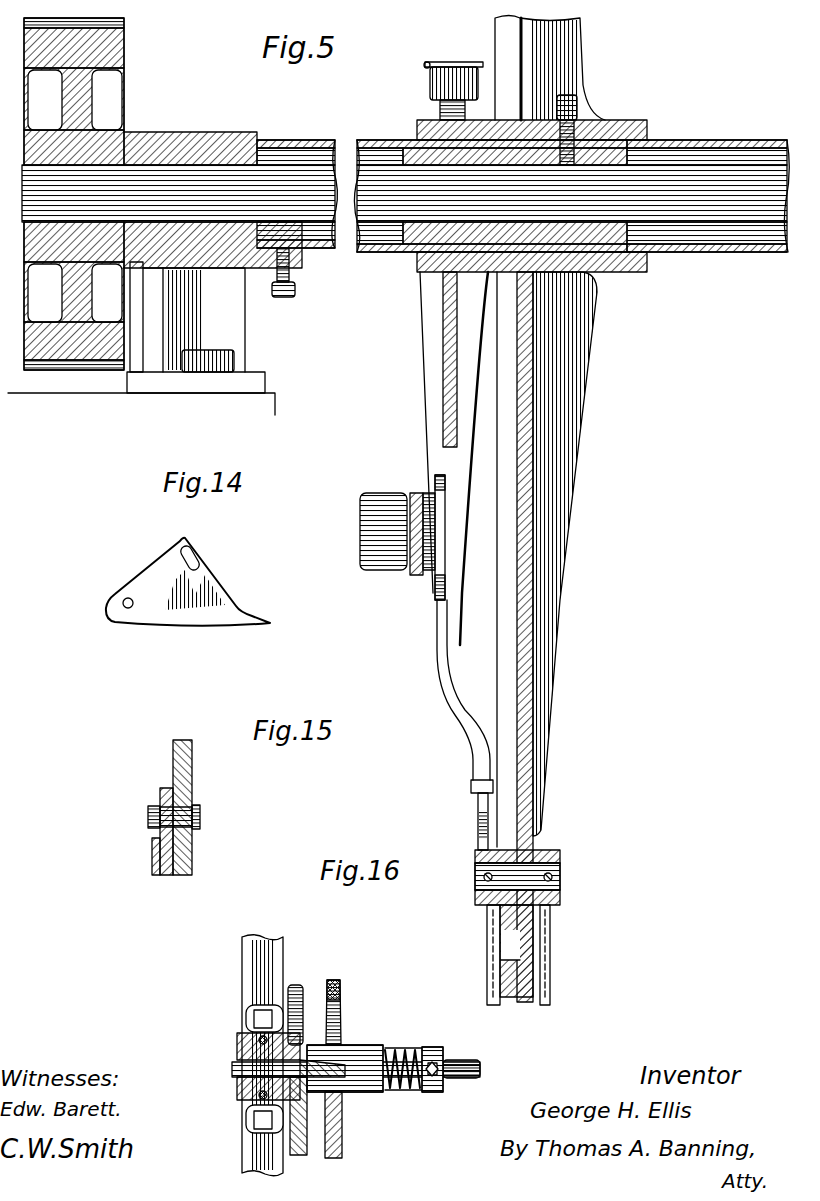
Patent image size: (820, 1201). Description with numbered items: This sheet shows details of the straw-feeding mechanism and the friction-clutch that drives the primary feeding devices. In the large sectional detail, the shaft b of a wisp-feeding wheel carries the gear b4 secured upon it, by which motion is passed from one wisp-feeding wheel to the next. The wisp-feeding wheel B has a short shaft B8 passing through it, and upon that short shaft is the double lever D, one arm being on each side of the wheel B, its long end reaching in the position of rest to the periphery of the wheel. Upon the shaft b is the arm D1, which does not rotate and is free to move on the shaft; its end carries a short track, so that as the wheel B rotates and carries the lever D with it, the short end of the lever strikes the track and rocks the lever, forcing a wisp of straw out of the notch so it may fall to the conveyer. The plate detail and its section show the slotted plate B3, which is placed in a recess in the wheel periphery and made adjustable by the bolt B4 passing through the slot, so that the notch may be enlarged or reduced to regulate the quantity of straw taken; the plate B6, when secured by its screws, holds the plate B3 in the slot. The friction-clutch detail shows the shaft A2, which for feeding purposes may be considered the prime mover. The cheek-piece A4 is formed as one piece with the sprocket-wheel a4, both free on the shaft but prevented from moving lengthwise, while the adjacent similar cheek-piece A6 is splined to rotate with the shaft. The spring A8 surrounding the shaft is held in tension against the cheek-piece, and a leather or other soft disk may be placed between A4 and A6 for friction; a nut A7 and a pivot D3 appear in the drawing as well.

In FIG. 5, the shaft b is at (282, 138).
In FIG. 5, the gear b4 is at (118, 107).
In FIG. 5, the wisp-feeding wheel B is at (557, 375).
In FIG. 15, the wisp-feeding wheel B is at (185, 862).
In FIG. 14, the plate B3 is at (205, 582).
In FIG. 15, the plate B3 is at (160, 790).
In FIG. 15, the bolt B4 is at (196, 816).
In FIG. 15, the plate B6 is at (150, 850).
In FIG. 5, the short shaft B8 is at (540, 870).
In FIG. 5, the double lever D is at (486, 980).
In FIG. 5, the arm D1 is at (437, 650).
In FIG. 5, the pivot bolt D3 is at (411, 492).
In FIG. 16, the sprocket-wheel a4 is at (300, 985).
In FIG. 16, the shaft A2 is at (465, 1077).
In FIG. 16, the cheek-piece A4 is at (312, 1140).
In FIG. 16, the cheek-piece A6 is at (345, 1108).
In FIG. 16, the nut A7 is at (440, 1052).
In FIG. 16, the spring A8 is at (394, 1046).